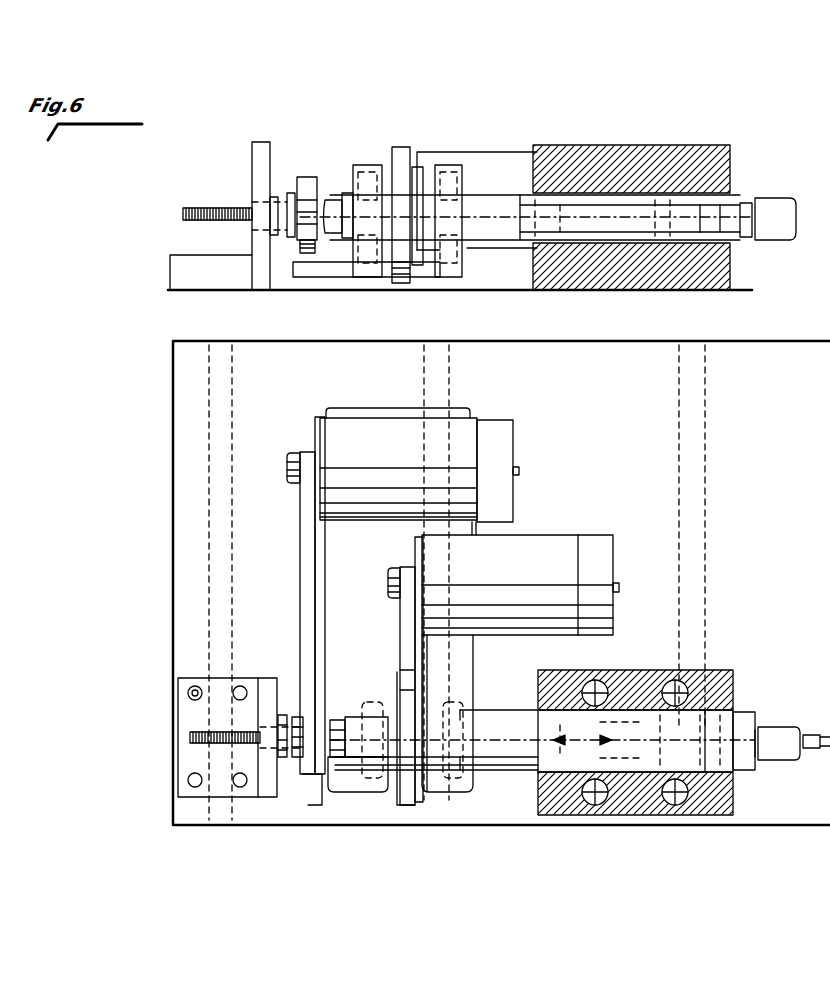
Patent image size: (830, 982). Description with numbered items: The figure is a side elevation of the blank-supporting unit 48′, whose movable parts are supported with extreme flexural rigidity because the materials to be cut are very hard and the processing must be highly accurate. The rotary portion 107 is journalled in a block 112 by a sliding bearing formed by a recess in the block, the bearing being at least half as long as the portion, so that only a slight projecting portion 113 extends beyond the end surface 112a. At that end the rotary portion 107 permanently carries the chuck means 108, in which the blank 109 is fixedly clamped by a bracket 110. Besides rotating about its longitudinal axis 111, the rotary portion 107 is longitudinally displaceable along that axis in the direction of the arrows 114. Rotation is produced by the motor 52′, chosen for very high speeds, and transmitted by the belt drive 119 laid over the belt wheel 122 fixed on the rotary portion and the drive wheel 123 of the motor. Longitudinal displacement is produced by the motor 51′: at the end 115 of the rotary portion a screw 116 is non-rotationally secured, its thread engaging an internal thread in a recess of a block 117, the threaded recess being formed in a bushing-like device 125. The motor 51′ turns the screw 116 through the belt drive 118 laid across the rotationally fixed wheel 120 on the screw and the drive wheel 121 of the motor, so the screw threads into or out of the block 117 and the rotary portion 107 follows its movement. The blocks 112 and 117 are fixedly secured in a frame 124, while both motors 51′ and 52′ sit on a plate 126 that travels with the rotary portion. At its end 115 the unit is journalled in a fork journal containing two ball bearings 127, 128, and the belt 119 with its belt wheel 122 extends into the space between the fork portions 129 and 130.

The blank-supporting unit 48′ is at (618, 816).
The motor 51′ is at (493, 420).
The motor 52′ is at (468, 152).
The rotary portion 107 is at (520, 771).
The chuck means 108 is at (767, 200).
The blank 109 is at (818, 737).
The bracket 110 is at (810, 750).
The longitudinal axis 111 is at (565, 772).
The block 112 is at (628, 152).
The end surface 112a is at (737, 672).
The projecting portion 113 is at (748, 695).
The arrows 114 is at (560, 740).
The end 115 is at (345, 770).
The screw 116 is at (232, 206).
The block 117 is at (176, 260).
The belt drive 118 is at (306, 564).
The belt drive 119 is at (402, 640).
The wheel 120 is at (318, 790).
The drive wheel 121 is at (297, 455).
The belt wheel 122 is at (401, 150).
The drive wheel 123 is at (398, 567).
The frame 124 is at (618, 352).
The bushing-like device 125 is at (276, 198).
The plate 126 is at (462, 279).
The ball bearing 127 is at (372, 800).
The ball bearing 128 is at (455, 800).
The fork portion 129 is at (330, 642).
The fork portion 130 is at (462, 655).